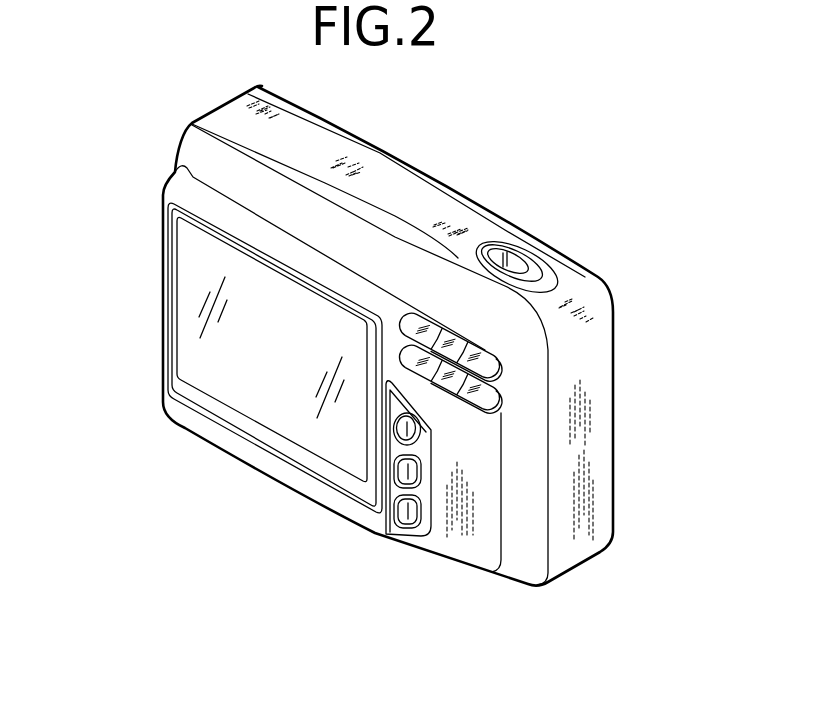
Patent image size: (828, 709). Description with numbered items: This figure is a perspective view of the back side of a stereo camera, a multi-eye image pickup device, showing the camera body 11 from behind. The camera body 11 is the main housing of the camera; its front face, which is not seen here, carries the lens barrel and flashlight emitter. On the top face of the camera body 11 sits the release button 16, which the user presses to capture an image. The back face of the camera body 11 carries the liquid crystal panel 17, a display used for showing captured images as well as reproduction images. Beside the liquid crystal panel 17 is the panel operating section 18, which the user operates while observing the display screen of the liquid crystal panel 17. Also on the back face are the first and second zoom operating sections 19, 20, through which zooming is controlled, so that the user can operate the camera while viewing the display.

The camera body 11 is at (470, 194).
The release button 16 is at (517, 253).
The liquid crystal panel 17 is at (291, 414).
The panel operating section 18 is at (407, 513).
The first zoom operating section 19 is at (500, 378).
The second zoom operating section 20 is at (500, 410).